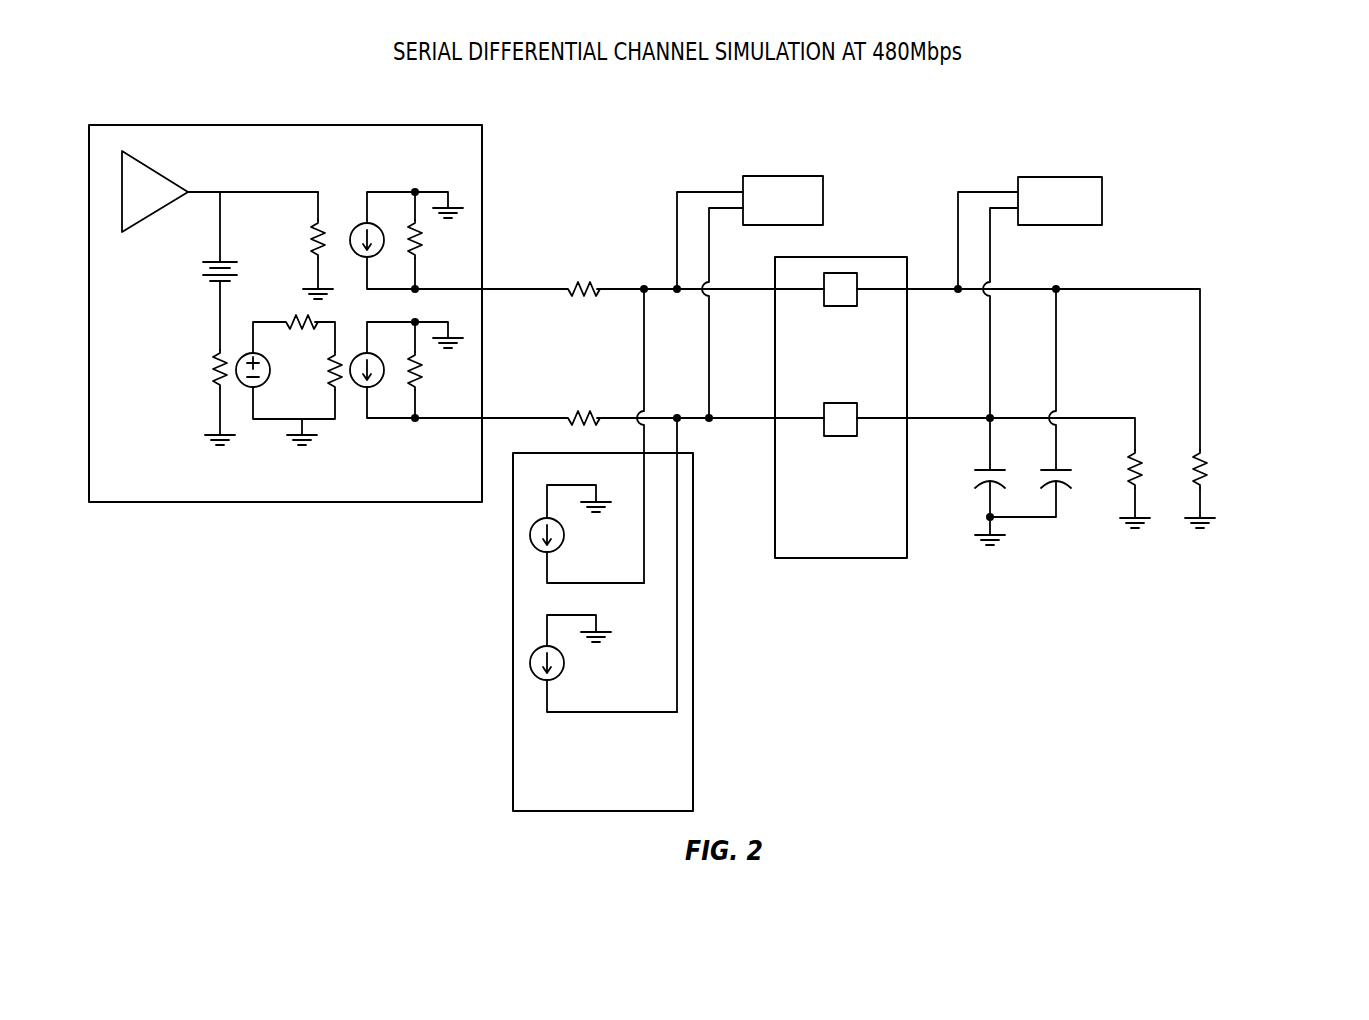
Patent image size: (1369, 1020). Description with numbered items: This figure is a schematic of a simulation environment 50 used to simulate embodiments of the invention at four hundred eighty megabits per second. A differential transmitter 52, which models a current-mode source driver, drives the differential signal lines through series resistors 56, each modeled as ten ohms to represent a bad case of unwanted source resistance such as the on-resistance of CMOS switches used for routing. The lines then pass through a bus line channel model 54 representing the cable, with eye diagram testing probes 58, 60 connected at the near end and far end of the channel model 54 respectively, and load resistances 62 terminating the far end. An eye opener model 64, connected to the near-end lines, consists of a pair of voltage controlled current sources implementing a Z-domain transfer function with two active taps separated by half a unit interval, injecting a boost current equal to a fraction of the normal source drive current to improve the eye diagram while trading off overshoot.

The simulation environment 50 is at (627, 142).
The differential transmitter 52 is at (463, 166).
The bus line channel model 54 is at (851, 548).
The series resistors 56 is at (577, 282).
The eye diagram testing probe 58 is at (823, 200).
The eye diagram testing probe 60 is at (1102, 200).
The load resistances 62 is at (1246, 465).
The eye opener model 64 is at (614, 800).